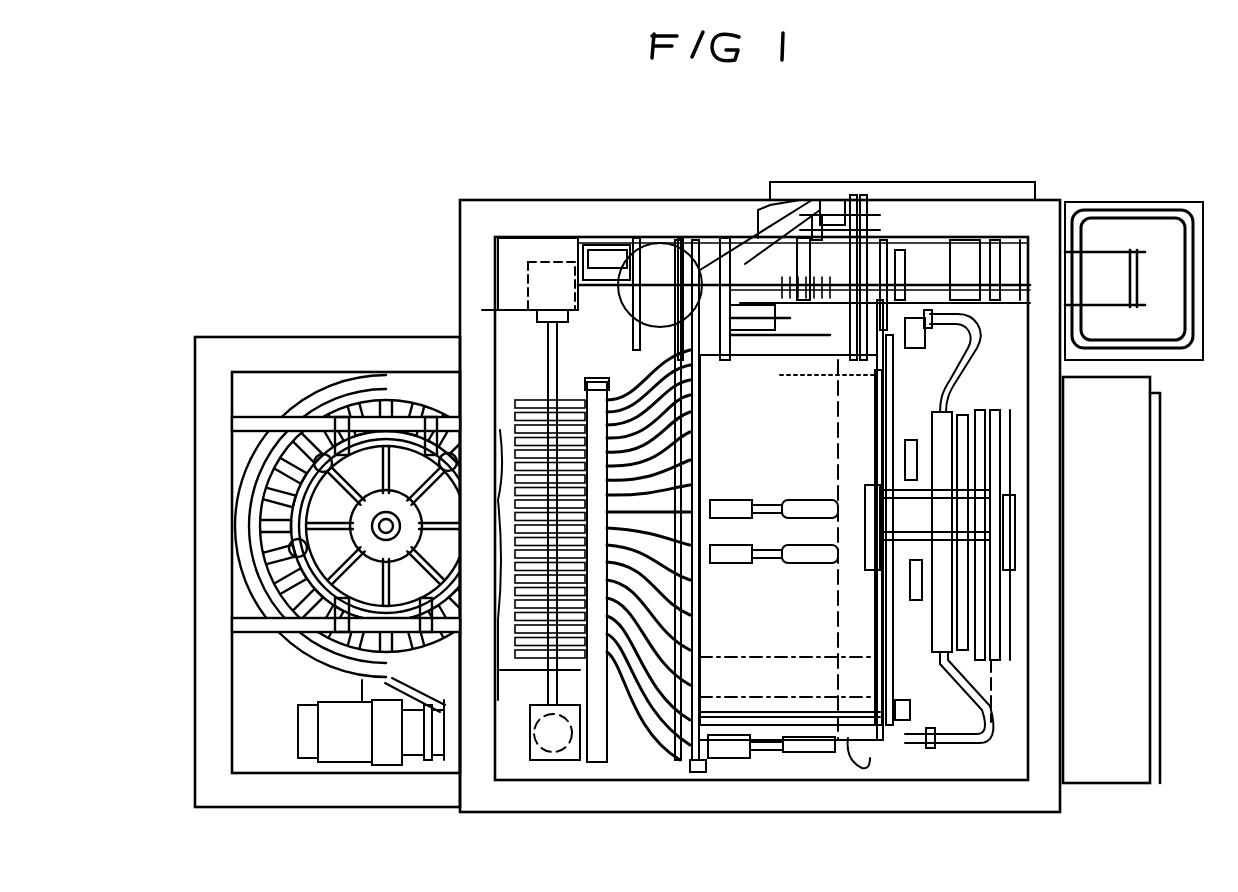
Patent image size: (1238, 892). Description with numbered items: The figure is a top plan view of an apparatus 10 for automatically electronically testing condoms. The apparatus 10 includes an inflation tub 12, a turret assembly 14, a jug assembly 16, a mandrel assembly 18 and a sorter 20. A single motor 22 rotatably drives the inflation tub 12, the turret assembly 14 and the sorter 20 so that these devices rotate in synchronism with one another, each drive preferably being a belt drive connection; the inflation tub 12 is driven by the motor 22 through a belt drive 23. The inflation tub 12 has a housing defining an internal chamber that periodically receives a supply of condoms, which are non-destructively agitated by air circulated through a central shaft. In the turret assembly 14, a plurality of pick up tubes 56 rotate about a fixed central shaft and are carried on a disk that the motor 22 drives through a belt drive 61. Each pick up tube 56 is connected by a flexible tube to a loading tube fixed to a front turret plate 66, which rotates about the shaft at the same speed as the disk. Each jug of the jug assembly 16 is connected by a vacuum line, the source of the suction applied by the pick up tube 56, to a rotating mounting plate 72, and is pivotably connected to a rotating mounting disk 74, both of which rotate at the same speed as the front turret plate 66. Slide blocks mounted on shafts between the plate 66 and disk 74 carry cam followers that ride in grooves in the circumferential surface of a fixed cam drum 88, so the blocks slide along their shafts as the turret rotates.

The apparatus 10 is at (992, 156).
The inflation tub 12 is at (230, 533).
The turret assembly 14 is at (600, 378).
The jug assembly 16 is at (905, 470).
The mandrel assembly 18 is at (734, 760).
The sorter 20 is at (852, 190).
The motor 22 is at (345, 720).
The belt drive 23 is at (442, 712).
The pick up tubes 56 is at (506, 422).
The belt drive 61 is at (612, 722).
The front turret plate 66 is at (702, 418).
The rotating mounting plate 72 is at (1005, 412).
The rotating mounting disk 74 is at (895, 646).
The fixed cam drum 88 is at (791, 534).